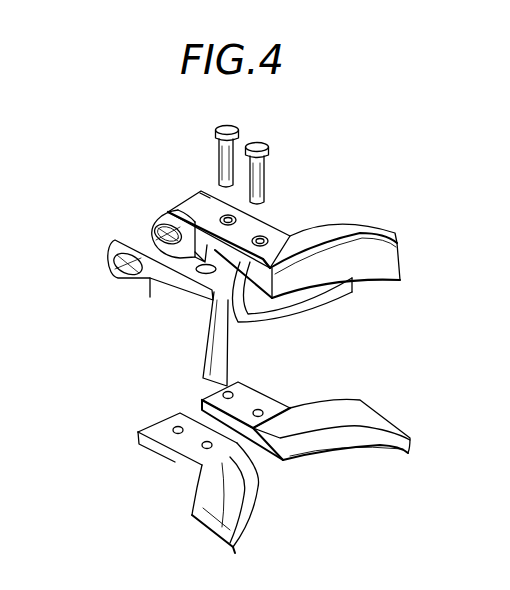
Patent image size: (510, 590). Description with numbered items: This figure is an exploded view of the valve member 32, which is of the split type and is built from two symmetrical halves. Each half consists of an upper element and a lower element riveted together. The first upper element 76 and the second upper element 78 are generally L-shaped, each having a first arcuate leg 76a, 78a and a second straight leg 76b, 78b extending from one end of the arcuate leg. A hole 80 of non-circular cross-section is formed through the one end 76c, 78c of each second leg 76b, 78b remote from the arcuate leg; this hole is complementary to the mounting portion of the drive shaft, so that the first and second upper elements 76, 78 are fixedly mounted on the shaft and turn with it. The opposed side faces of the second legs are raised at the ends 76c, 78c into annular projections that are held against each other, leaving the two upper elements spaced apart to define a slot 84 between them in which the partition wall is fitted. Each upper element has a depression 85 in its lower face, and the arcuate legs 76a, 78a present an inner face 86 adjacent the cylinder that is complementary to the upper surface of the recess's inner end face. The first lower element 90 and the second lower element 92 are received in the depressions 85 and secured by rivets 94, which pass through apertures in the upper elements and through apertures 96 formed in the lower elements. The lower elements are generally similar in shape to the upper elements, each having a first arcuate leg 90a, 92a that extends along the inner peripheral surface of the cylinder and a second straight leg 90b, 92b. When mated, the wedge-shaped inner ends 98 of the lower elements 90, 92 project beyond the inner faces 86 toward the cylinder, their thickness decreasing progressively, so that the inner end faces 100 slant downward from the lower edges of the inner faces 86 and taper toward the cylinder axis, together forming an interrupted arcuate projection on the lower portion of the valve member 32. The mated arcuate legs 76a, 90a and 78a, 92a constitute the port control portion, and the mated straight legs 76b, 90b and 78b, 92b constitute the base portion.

The valve member 32 is at (373, 345).
The first upper element 76 is at (138, 309).
The first arcuate leg 76a is at (212, 400).
The second straight leg 76b is at (178, 302).
The one end of the second leg 76c is at (120, 254).
The second upper element 78 is at (292, 206).
The first arcuate leg 78a is at (360, 228).
The second straight leg 78b is at (250, 222).
The one end of the second leg 78c is at (202, 195).
The hole 80 is at (143, 226).
The slot 84 is at (264, 260).
The depression 85 is at (200, 222).
The inner face 86 is at (385, 252).
The first lower element 90 is at (182, 483).
The first arcuate leg 90a is at (197, 500).
The second straight leg 90b is at (168, 458).
The second lower element 92 is at (310, 406).
The first arcuate leg 92a is at (345, 403).
The second straight leg 92b is at (280, 395).
The rivets 94 is at (232, 126).
The apertures 96 is at (259, 409).
The inner end 98 is at (411, 439).
The inner end face 100 is at (372, 433).